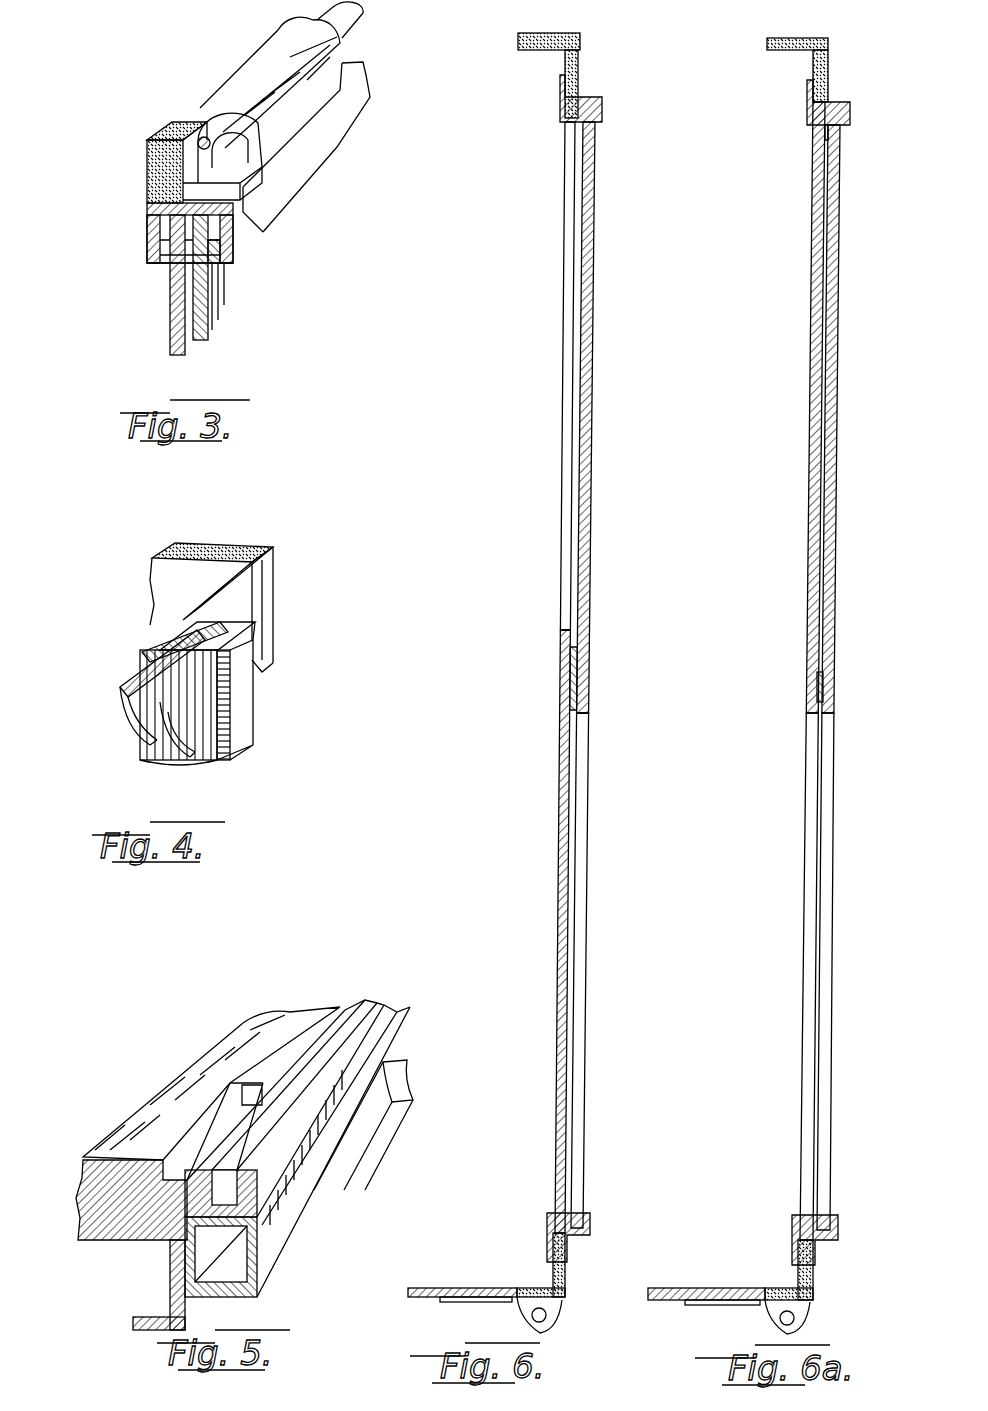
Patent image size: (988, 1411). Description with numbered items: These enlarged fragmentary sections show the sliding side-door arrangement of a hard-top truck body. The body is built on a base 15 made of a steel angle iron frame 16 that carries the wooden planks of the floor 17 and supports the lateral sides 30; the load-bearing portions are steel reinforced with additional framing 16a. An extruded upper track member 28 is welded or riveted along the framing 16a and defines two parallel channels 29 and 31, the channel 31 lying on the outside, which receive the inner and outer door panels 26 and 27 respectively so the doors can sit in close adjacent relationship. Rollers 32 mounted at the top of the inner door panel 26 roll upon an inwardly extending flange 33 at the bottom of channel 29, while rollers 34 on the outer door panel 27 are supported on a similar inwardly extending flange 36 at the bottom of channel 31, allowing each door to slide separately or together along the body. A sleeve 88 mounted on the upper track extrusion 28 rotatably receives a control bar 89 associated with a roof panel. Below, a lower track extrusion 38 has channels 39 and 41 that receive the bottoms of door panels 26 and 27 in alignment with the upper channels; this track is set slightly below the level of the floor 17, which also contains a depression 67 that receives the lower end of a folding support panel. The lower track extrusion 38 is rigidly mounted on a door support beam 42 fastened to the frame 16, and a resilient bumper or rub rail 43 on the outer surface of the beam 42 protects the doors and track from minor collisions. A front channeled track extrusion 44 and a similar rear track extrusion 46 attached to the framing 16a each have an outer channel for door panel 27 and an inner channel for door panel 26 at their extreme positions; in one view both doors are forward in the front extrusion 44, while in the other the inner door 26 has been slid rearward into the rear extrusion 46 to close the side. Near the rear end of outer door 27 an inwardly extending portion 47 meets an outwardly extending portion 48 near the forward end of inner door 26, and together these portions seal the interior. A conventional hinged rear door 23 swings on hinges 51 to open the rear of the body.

In FIG. 5, the base 15 is at (118, 1140).
In FIG. 5, the steel angle iron frame 16 is at (152, 1322).
In FIG. 3, the framing 16a is at (185, 122).
In FIG. 4, the framing 16a is at (258, 547).
In FIG. 6, the framing 16a is at (578, 40).
In FIG. 6A, the framing 16a is at (828, 45).
In FIG. 5, the floor 17 is at (108, 1242).
In FIG. 6, the rear door 23 is at (445, 1288).
In FIG. 6A, the rear door 23 is at (720, 1288).
In FIG. 3, the door panel 26 is at (170, 332).
In FIG. 4, the door panel 26 is at (115, 690).
In FIG. 6, the door panel 26 is at (560, 870).
In FIG. 6A, the door panel 26 is at (808, 495).
In FIG. 3, the door panel 27 is at (215, 312).
In FIG. 4, the door panel 27 is at (195, 738).
In FIG. 6, the door panel 27 is at (592, 455).
In FIG. 6A, the door panel 27 is at (836, 545).
In FIG. 3, the upper track member 28 is at (147, 182).
In FIG. 3, the channel 29 is at (147, 209).
In FIG. 4, the lateral sides 30 is at (263, 595).
In FIG. 3, the channel 31 is at (235, 208).
In FIG. 3, the rollers 32 is at (147, 241).
In FIG. 3, the inwardly extending flange 33 is at (158, 262).
In FIG. 3, the rollers 34 is at (230, 242).
In FIG. 3, the inwardly extending flange 36 is at (222, 268).
In FIG. 5, the lower track extrusion 38 is at (385, 1062).
In FIG. 5, the channel 39 is at (348, 1010).
In FIG. 6, the channel 39 is at (566, 322).
In FIG. 6A, the channel 39 is at (806, 1008).
In FIG. 5, the channel 41 is at (388, 1008).
In FIG. 6, the channel 41 is at (586, 955).
In FIG. 6A, the channel 41 is at (834, 1058).
In FIG. 5, the door support beam 42 is at (228, 1297).
In FIG. 5, the resilient bumper or rub rail 43 is at (320, 1188).
In FIG. 4, the front track extrusion 44 is at (243, 712).
In FIG. 6, the front track extrusion 44 is at (603, 105).
In FIG. 6A, the front track extrusion 44 is at (850, 110).
In FIG. 6, the rear track extrusion 46 is at (585, 1236).
In FIG. 6A, the rear track extrusion 46 is at (838, 1230).
In FIG. 6, the inwardly extending portion 47 is at (560, 685).
In FIG. 6A, the inwardly extending portion 47 is at (808, 690).
In FIG. 6, the outwardly extending portion 48 is at (578, 655).
In FIG. 6A, the outwardly extending portion 48 is at (812, 145).
In FIG. 6, the hinges 51 is at (550, 1316).
In FIG. 6A, the hinges 51 is at (797, 1318).
In FIG. 5, the depression 67 is at (210, 1085).
In FIG. 3, the sleeve 88 is at (253, 83).
In FIG. 3, the control bar 89 is at (355, 20).